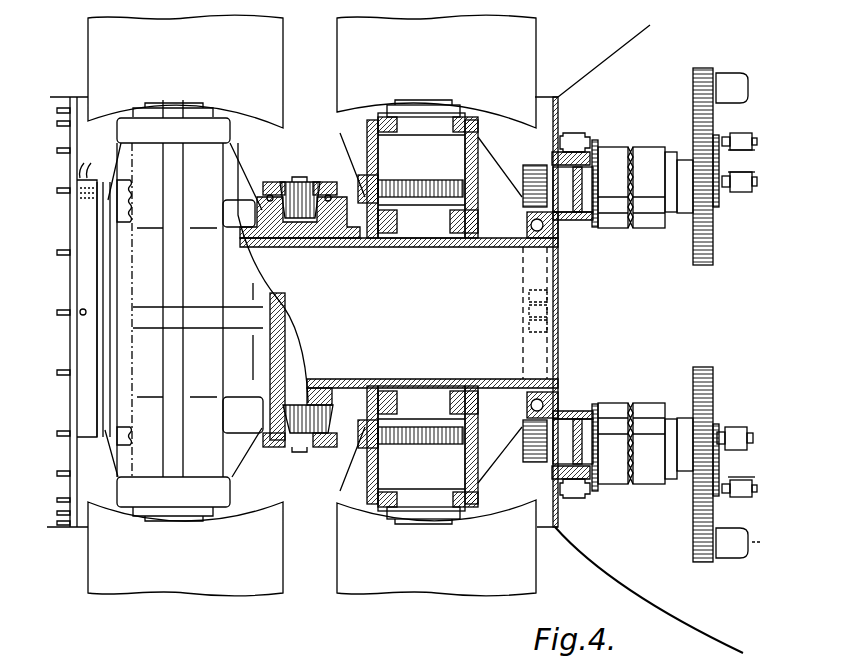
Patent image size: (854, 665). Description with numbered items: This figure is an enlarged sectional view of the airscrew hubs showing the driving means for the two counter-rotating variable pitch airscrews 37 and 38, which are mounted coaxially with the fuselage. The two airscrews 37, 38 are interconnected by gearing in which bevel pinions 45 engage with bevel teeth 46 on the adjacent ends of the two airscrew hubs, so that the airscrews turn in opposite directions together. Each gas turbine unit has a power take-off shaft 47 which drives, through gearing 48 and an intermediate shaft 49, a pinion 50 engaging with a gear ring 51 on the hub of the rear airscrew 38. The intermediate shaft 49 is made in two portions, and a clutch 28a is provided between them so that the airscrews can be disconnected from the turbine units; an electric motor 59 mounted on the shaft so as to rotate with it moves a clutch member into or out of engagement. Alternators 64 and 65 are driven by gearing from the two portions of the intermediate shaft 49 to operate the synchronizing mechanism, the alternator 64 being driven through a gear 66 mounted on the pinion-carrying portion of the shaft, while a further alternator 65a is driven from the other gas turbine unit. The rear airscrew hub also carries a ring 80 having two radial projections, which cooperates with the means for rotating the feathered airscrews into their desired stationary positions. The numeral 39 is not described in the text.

The airscrew 37 is at (95, 106).
The rear airscrew 38 is at (537, 80).
The traction wheel 39 is at (280, 65).
The bevel pinion 45 is at (303, 177).
The bevel teeth 46 is at (272, 182).
The power take-off shaft 47 is at (731, 75).
The gearing 48 is at (693, 113).
The intermediate shaft 49 is at (670, 192).
The pinion 50 is at (547, 168).
The gear ring 51 is at (558, 358).
The electric motor 59 is at (738, 180).
The alternator 64 is at (578, 141).
The alternator 65 is at (742, 138).
The alternator 65a is at (736, 430).
The gear 66 is at (596, 404).
The clutch 28a is at (655, 229).
The ring 80 is at (245, 647).